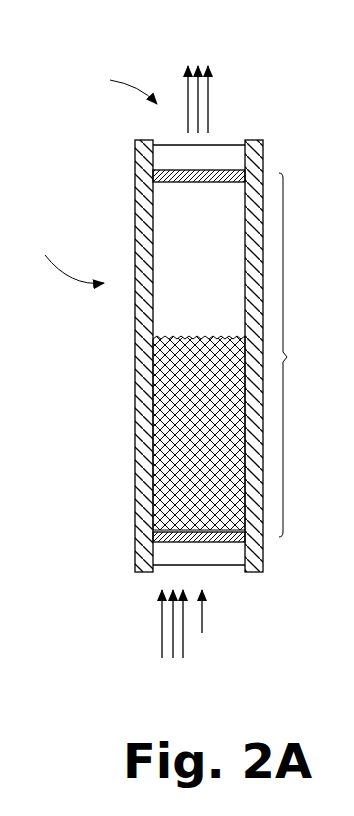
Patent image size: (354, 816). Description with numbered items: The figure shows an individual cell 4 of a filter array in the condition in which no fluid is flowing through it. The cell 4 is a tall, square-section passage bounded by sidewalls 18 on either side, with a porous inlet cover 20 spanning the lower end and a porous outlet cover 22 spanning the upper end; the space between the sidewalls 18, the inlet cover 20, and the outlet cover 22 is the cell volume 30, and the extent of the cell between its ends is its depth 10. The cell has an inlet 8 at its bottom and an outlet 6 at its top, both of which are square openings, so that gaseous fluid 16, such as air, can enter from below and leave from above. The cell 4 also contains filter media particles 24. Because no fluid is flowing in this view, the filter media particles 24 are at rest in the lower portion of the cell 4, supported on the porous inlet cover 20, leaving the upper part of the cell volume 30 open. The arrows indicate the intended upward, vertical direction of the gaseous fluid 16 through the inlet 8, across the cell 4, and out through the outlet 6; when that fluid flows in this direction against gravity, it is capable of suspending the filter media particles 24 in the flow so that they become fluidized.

The cell 4 is at (71, 256).
The outlet 6 is at (127, 85).
The inlet 8 is at (202, 624).
The depth 10 is at (301, 355).
The gaseous fluid 16 is at (186, 362).
The sidewalls 18 is at (245, 222).
The porous inlet cover 20 is at (222, 544).
The porous outlet cover 22 is at (222, 168).
The filter media particles 24 is at (137, 443).
The cell volume 30 is at (187, 297).